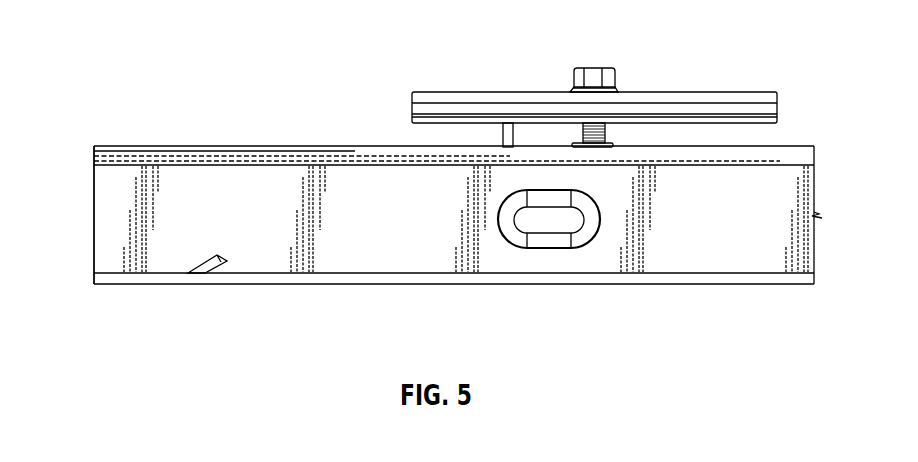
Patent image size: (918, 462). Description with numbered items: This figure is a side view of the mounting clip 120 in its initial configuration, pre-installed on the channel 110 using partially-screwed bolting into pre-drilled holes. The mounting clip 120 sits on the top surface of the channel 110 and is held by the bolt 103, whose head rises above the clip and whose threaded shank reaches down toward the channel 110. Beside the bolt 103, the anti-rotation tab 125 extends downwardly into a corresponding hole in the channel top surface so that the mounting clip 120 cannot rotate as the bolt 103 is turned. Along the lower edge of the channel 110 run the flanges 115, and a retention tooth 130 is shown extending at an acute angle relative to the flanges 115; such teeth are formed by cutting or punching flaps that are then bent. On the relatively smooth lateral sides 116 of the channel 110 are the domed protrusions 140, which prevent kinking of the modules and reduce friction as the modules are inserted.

The bolt 103 is at (597, 68).
The channel 110 is at (182, 98).
The flanges 115 is at (150, 277).
The lateral sides 116 is at (112, 220).
The mounting clip 120 is at (675, 59).
The anti-rotation tab 125 is at (503, 137).
The retention teeth 130 is at (218, 256).
The domed protrusions 140 is at (547, 248).